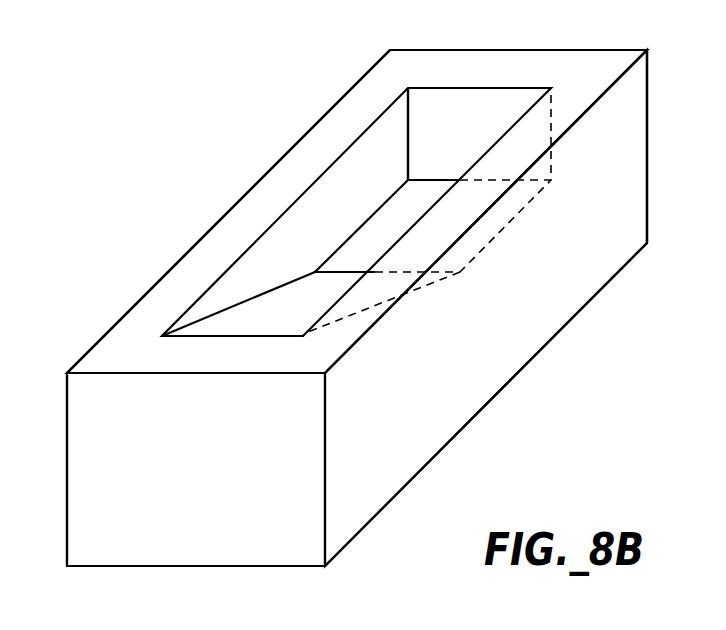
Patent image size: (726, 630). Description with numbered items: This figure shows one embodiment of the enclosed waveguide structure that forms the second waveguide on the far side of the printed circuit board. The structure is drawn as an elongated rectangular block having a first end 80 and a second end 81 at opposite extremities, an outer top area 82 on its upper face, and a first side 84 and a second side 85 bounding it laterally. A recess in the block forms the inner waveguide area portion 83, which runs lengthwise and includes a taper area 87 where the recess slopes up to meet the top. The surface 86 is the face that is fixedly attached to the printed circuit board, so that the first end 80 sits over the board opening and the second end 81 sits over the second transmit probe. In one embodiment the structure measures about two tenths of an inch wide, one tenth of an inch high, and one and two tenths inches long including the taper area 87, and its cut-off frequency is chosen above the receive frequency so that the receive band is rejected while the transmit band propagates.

The first end 80 is at (85, 432).
The second end 81 is at (557, 48).
The outer top area 82 is at (538, 352).
The inner waveguide area portion 83 is at (420, 192).
The first side 84 is at (635, 198).
The second side 85 is at (265, 172).
The surface 86 is at (163, 303).
The taper area 87 is at (285, 313).